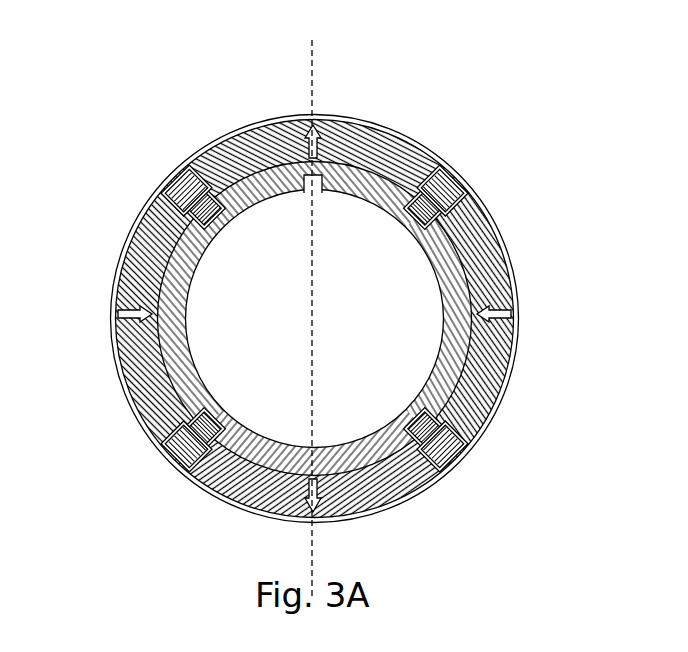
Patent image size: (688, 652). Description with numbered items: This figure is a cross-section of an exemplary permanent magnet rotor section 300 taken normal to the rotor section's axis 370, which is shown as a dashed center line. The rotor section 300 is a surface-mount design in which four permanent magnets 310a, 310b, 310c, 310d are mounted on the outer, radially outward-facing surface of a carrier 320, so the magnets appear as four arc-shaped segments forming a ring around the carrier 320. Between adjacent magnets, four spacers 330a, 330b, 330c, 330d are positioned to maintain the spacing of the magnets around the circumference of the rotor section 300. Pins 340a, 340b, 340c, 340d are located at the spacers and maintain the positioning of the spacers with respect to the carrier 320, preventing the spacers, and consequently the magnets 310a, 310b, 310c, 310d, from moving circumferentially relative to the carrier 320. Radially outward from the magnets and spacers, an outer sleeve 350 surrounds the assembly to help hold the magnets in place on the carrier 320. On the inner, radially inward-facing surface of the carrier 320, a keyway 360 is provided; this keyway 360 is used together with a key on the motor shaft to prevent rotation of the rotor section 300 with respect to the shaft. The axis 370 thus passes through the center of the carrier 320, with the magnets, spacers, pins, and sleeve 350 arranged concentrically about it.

The rotor section 300 is at (218, 83).
The permanent magnet 310a is at (395, 142).
The permanent magnet 310b is at (504, 278).
The permanent magnet 310c is at (398, 498).
The permanent magnet 310d is at (128, 245).
The carrier 320 is at (190, 290).
The spacer 330a is at (448, 180).
The spacer 330b is at (453, 463).
The spacer 330c is at (168, 455).
The spacer 330d is at (184, 178).
The pin 340a is at (412, 218).
The pin 340b is at (412, 415).
The pin 340c is at (208, 414).
The pin 340d is at (213, 221).
The outer sleeve 350 is at (341, 117).
The keyway 360 is at (308, 190).
The axis 370 is at (312, 82).